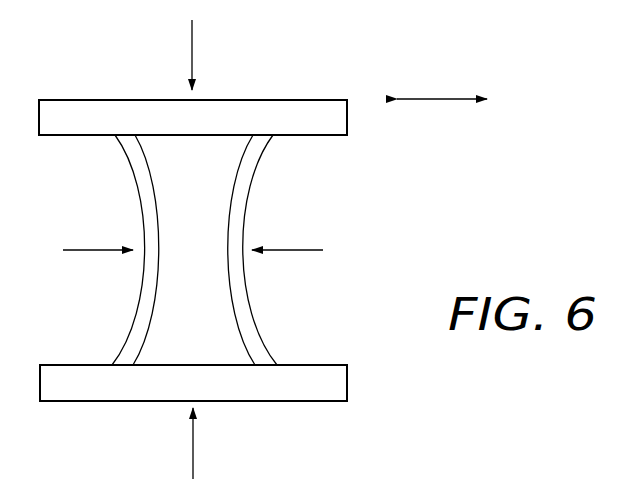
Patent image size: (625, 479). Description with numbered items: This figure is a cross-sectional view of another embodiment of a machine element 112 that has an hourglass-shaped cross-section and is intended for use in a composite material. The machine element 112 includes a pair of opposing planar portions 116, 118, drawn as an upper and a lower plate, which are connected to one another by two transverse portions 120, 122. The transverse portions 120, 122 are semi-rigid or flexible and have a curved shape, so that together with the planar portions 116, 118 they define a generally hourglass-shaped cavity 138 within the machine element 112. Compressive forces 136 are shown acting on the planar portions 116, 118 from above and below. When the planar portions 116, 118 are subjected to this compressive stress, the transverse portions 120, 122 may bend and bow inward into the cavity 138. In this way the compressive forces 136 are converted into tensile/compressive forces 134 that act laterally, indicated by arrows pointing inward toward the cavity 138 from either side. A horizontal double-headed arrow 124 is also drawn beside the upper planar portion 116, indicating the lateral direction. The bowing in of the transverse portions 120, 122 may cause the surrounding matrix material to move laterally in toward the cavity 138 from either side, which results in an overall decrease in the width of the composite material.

The machine element 112 is at (215, 239).
The planar portion 116 is at (87, 100).
The planar portion 118 is at (98, 401).
The transverse portion 120 is at (140, 183).
The transverse portion 122 is at (250, 180).
The lateral displacement direction 124 is at (438, 99).
The tensile/compressive forces 134 is at (95, 250).
The compressive forces 136 is at (192, 48).
The cavity 138 is at (212, 343).